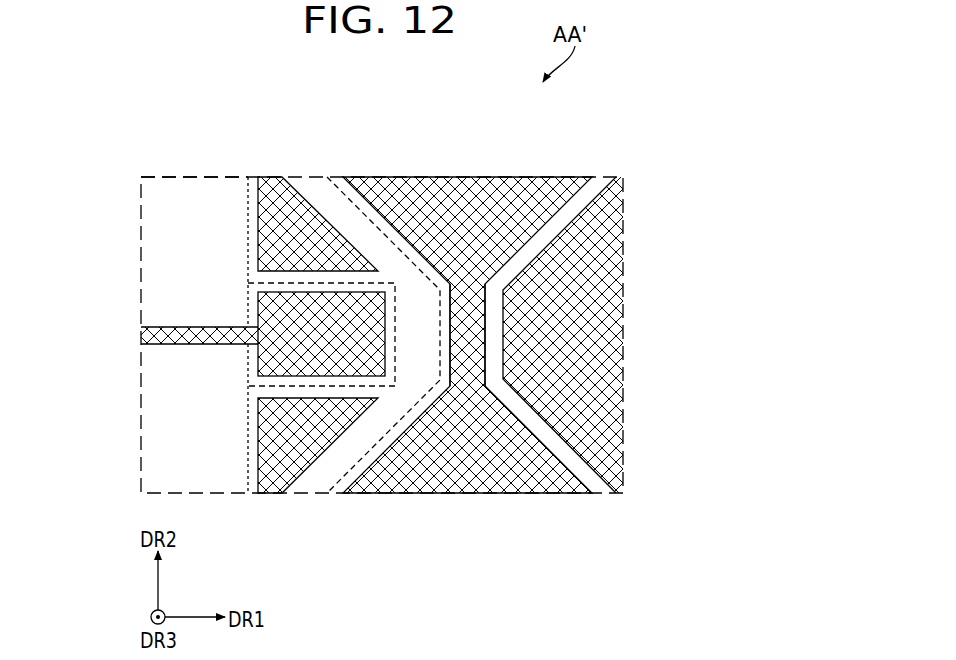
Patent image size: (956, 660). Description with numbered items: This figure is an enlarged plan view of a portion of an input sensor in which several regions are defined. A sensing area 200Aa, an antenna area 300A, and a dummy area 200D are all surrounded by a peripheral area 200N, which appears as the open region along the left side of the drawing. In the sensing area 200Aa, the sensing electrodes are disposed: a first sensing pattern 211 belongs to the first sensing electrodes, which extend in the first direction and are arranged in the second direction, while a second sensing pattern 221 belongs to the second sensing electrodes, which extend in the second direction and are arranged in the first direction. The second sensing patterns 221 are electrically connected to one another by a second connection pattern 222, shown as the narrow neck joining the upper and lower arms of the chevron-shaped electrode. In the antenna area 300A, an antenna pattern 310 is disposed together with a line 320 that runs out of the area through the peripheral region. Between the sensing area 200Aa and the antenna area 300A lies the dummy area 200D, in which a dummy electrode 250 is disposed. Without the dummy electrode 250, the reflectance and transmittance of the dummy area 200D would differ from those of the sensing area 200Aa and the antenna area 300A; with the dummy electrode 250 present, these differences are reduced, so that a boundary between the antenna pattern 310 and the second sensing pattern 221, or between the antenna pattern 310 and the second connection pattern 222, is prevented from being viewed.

The peripheral area 200N is at (192, 177).
The dummy area 200D is at (248, 447).
The sensing area 200Aa is at (580, 177).
The dummy electrode 250 is at (271, 182).
The antenna area 300A is at (248, 362).
The antenna pattern 310 is at (258, 307).
The line 320 is at (152, 336).
The second sensing pattern 221 is at (462, 188).
The second connection pattern 222 is at (478, 326).
The first sensing pattern 211 is at (620, 260).